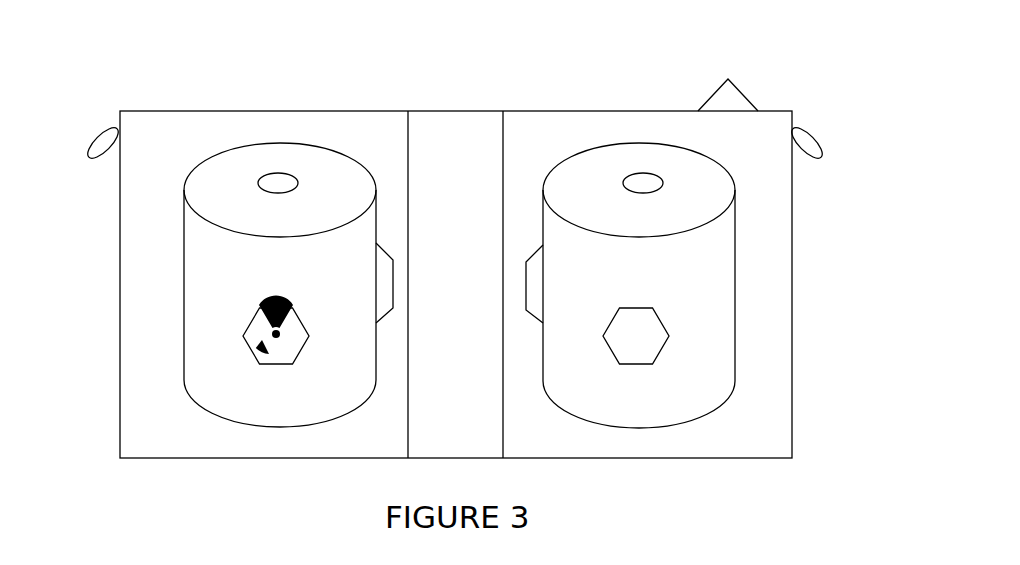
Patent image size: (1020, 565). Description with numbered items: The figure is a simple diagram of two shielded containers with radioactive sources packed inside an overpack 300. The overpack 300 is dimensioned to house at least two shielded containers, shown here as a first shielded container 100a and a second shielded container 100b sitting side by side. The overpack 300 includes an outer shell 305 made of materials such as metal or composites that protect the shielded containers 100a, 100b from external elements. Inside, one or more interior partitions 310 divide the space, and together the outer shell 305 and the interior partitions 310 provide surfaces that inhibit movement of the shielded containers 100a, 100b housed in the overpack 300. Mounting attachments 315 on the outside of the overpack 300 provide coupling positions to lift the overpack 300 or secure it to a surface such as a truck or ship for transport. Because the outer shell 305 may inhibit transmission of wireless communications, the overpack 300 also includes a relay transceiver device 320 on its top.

The overpack 300 is at (796, 52).
The outer shell 305 is at (796, 430).
The interior partition 310 is at (496, 182).
The mounting attachment 315 is at (105, 142).
The relay transceiver device 320 is at (720, 95).
The first shielded container 100a is at (248, 265).
The second shielded container 100b is at (615, 270).